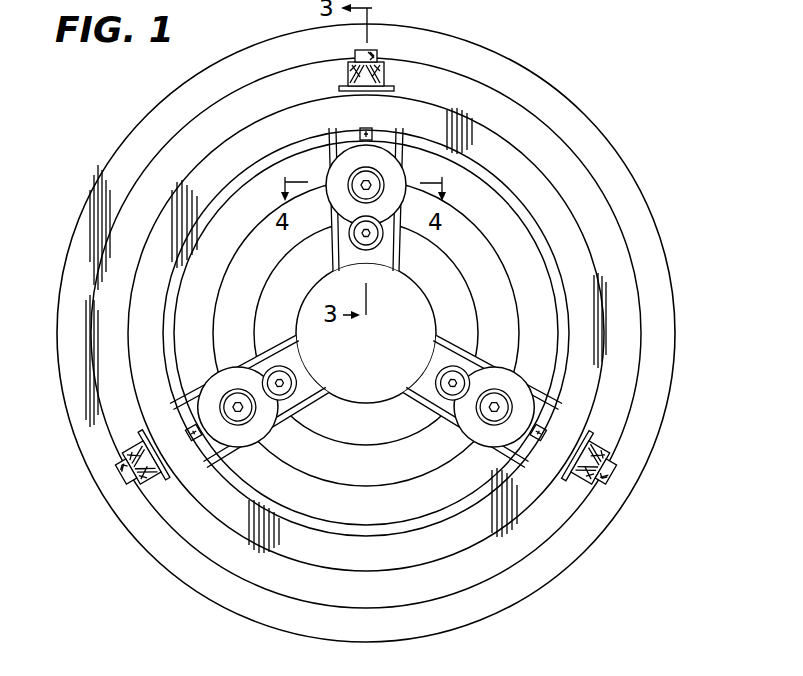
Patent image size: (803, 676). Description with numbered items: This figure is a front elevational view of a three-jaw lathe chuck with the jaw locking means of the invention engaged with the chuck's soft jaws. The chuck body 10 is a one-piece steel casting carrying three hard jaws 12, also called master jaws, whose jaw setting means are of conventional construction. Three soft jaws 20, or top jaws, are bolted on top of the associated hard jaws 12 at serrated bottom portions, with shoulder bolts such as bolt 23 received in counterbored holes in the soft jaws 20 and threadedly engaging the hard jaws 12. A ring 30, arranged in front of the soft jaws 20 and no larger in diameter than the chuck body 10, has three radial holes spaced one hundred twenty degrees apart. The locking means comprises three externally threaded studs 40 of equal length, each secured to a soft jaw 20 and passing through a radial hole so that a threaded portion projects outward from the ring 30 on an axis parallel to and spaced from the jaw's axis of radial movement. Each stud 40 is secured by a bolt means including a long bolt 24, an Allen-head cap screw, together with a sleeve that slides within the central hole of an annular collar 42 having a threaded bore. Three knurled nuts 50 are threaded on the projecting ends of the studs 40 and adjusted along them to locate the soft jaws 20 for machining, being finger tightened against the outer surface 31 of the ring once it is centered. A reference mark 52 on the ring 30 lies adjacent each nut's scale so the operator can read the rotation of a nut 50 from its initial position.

The chuck body 10 is at (572, 107).
The hard jaws 12 is at (323, 240).
The soft jaws 20 is at (387, 268).
The bolt 23 is at (381, 236).
The long bolt 24 is at (353, 180).
The ring 30 is at (580, 238).
The outer surface of ring 31 is at (603, 311).
The studs 40 is at (377, 54).
The annular collar 42 is at (392, 160).
The nuts 50 is at (384, 72).
The reference mark 52 is at (366, 92).